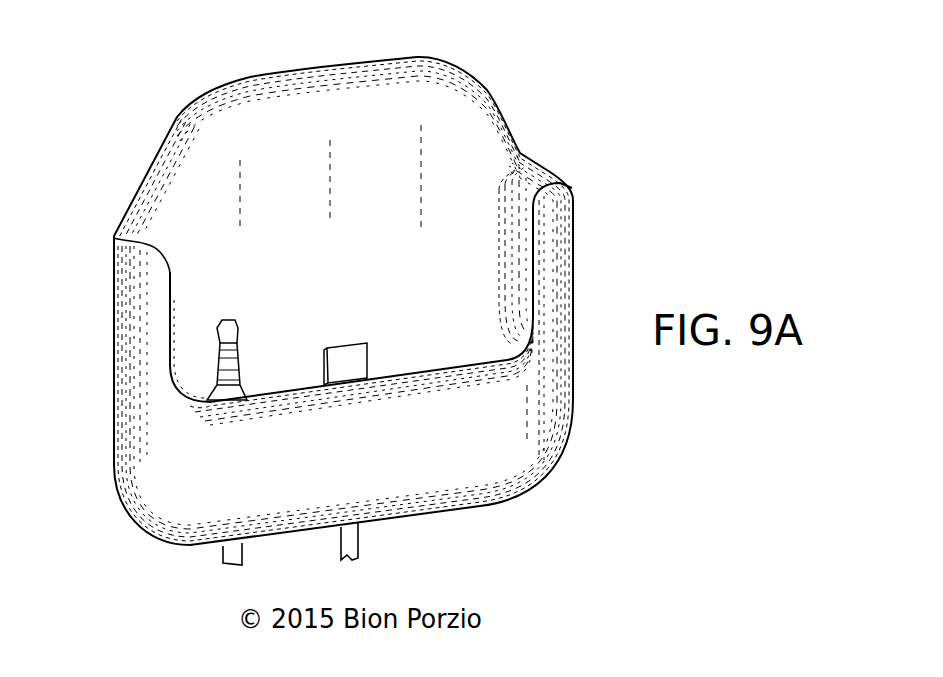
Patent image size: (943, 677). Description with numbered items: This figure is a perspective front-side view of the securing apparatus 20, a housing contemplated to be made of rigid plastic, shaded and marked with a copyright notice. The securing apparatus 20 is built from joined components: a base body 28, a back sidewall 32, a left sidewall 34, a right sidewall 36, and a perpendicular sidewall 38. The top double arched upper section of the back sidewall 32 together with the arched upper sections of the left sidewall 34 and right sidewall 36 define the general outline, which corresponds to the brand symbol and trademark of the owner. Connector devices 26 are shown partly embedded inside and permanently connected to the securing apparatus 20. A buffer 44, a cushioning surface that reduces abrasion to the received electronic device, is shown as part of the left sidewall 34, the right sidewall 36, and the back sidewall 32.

The securing apparatus 20 is at (585, 68).
The connector devices 26 is at (345, 362).
The base body 28 is at (437, 477).
The back sidewall 32 is at (277, 117).
The left sidewall 34 is at (125, 400).
The right sidewall 36 is at (573, 253).
The perpendicular sidewall 38 is at (547, 253).
The buffer 44 is at (507, 320).